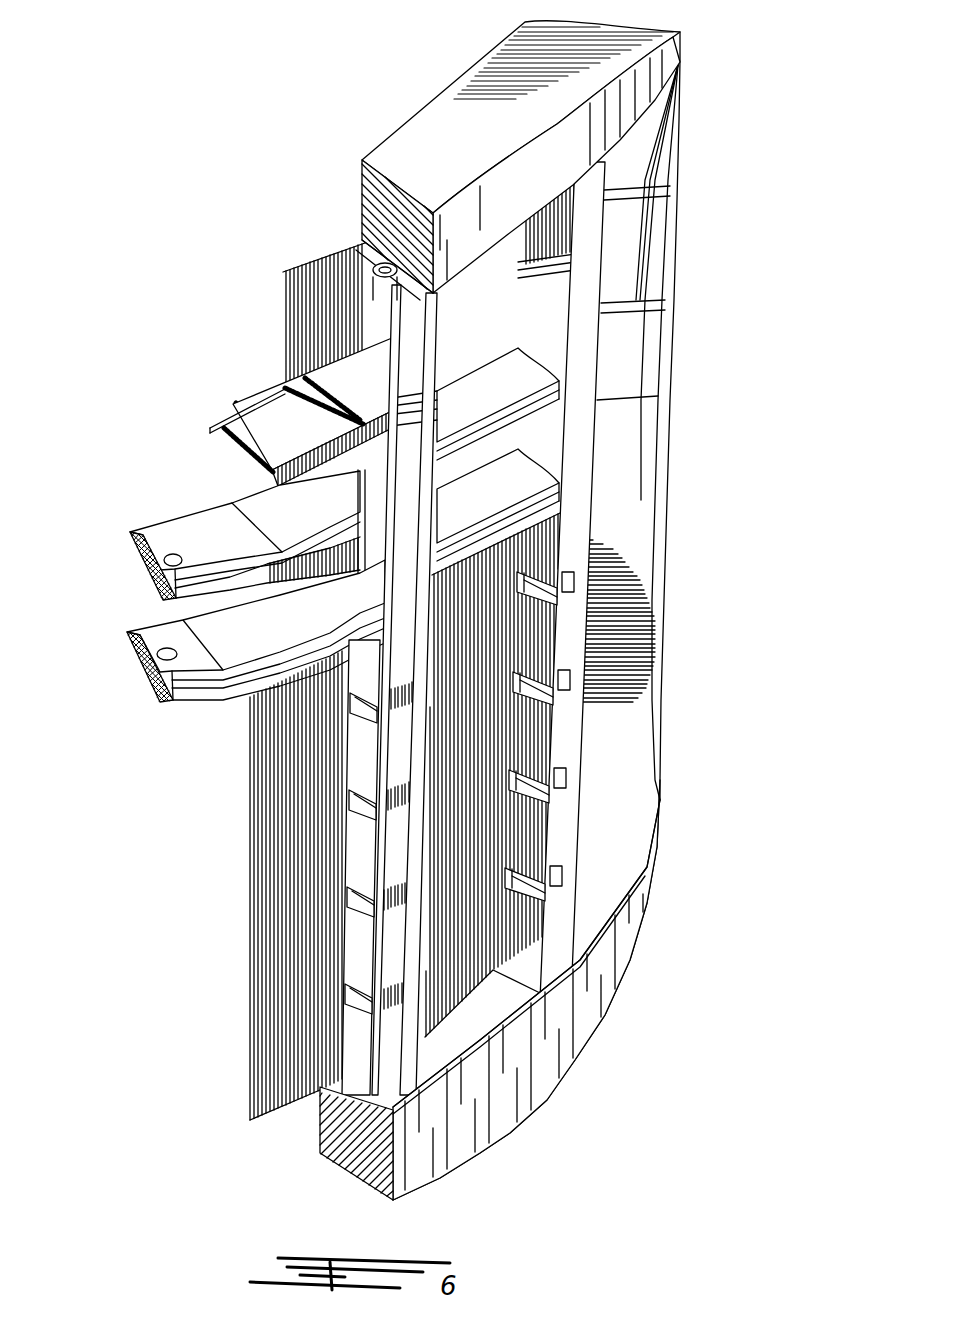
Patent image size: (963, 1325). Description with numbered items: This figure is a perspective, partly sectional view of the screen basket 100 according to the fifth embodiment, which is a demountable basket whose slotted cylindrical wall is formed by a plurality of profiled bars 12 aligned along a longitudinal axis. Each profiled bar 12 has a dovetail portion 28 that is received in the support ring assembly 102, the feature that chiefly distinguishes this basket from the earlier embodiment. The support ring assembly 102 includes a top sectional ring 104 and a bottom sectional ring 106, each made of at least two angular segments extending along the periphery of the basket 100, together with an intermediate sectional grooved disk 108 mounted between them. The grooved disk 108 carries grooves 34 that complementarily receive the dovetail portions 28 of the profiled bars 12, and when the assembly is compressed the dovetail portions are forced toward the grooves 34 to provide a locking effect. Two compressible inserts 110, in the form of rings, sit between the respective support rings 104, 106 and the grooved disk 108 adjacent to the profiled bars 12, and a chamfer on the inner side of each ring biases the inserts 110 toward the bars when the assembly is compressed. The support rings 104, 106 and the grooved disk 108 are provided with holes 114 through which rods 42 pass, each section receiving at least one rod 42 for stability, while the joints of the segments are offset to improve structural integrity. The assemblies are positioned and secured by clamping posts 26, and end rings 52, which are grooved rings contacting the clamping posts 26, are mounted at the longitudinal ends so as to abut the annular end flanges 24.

The profiled bars 12 is at (256, 895).
The annular end flanges 24 is at (630, 77).
The clamping posts 26 is at (567, 723).
The dovetail portion 28 is at (296, 275).
The grooves 34 is at (253, 397).
The rods 42 is at (375, 280).
The end rings 52 is at (372, 236).
The screen basket 100 is at (176, 152).
The support ring assembly 102 is at (214, 398).
The top sectional ring 104 is at (340, 258).
The bottom sectional ring 106 is at (247, 437).
The intermediate sectional grooved disk 108 is at (240, 404).
The compressible inserts 110 is at (287, 385).
The holes 114 is at (163, 650).